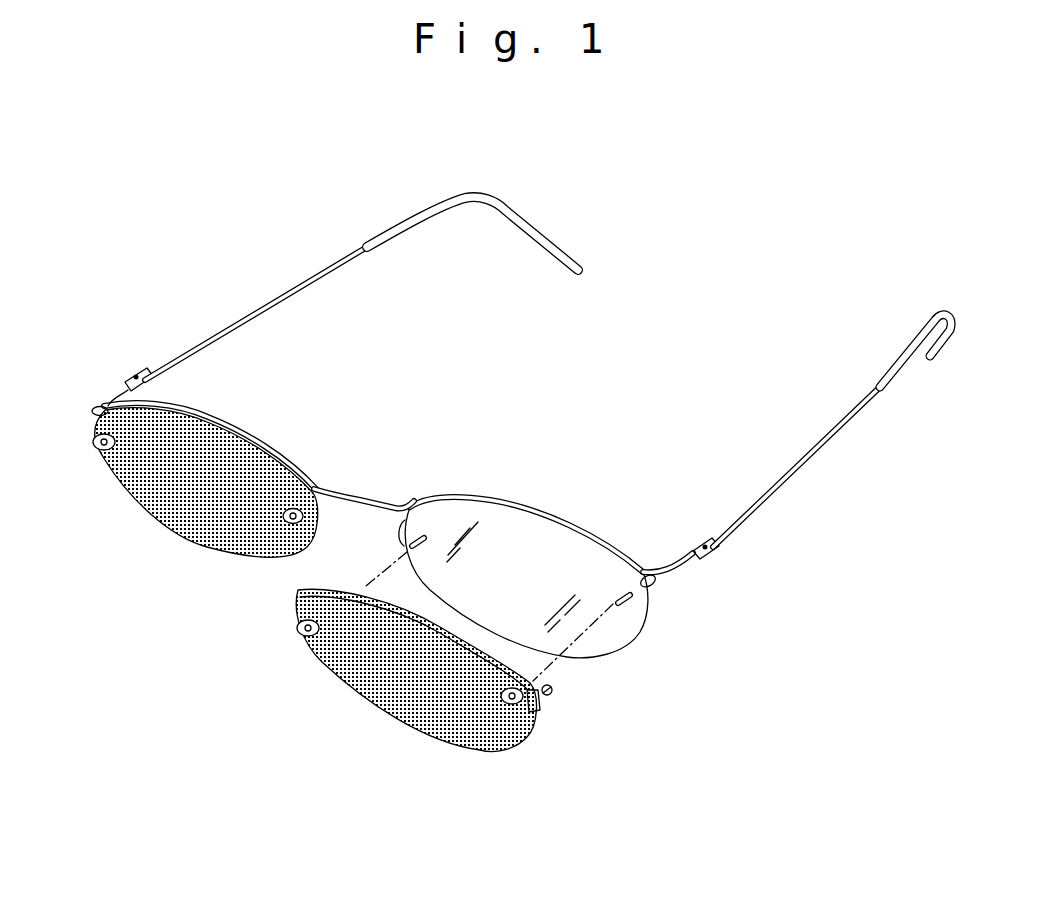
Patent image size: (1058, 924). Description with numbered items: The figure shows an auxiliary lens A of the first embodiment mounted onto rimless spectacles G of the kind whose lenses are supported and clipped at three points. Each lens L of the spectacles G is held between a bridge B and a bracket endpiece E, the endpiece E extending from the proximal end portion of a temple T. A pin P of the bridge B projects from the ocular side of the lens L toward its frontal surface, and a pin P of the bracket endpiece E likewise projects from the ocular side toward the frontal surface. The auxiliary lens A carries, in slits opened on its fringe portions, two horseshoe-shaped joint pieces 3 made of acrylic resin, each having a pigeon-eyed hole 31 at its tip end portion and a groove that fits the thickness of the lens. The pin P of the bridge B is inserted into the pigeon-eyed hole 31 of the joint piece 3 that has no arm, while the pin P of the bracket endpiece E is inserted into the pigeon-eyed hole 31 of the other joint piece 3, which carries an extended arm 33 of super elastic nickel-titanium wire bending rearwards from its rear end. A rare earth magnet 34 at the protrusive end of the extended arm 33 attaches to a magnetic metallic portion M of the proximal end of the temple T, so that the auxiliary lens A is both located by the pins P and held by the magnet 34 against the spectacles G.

The spectacles G is at (480, 488).
The auxiliary lens A is at (170, 520).
The lens L is at (262, 450).
The bridge B is at (355, 513).
The bracket endpiece E is at (648, 566).
The magnetic metallic portion M is at (96, 410).
The temple T is at (214, 333).
The pin P is at (670, 626).
The joint piece 3 is at (95, 432).
The pigeon-eyed hole 31 is at (305, 640).
The extended arm 33 is at (538, 707).
The magnet 34 is at (553, 693).